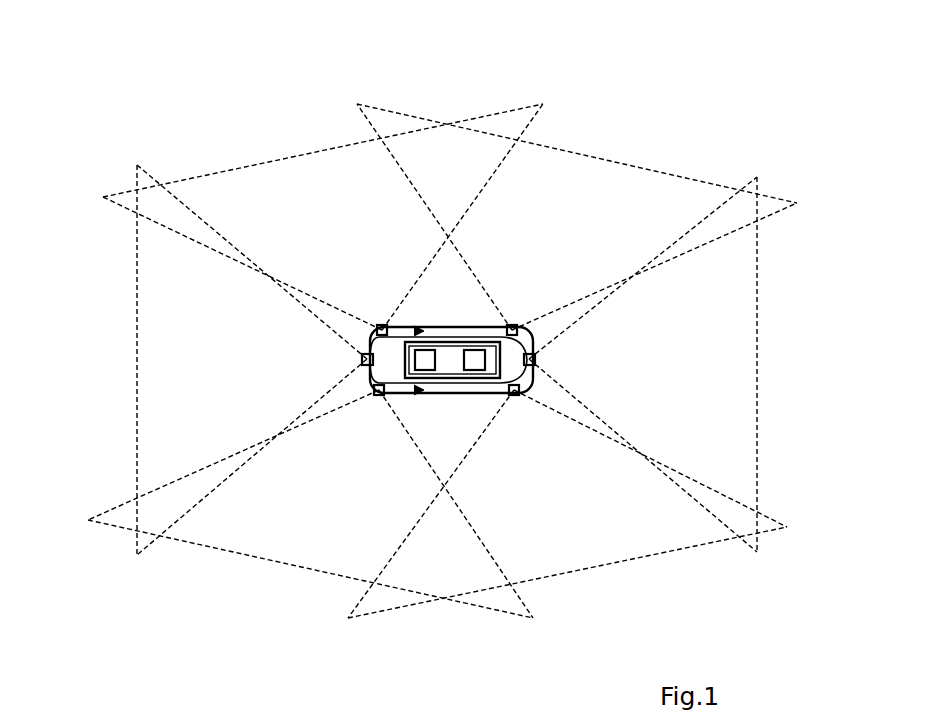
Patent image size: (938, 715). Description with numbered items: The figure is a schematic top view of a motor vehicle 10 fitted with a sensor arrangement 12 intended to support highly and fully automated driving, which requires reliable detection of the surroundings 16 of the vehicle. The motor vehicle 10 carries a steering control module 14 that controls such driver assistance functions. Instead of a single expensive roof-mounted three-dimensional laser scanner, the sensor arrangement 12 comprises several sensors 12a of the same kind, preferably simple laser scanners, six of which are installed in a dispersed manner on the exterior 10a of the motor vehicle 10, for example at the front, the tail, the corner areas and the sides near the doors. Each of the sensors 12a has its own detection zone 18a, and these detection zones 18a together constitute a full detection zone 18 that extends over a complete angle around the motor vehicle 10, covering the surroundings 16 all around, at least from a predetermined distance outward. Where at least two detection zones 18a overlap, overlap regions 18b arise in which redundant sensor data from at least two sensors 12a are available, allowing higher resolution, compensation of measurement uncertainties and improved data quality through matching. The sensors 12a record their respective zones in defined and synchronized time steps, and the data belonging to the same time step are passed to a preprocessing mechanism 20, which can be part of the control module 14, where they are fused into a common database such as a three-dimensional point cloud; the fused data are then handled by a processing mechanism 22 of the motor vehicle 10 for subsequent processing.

The motor vehicle 10 is at (448, 294).
The exterior of the motor vehicle 10a is at (457, 393).
The sensor arrangement 12 is at (448, 363).
The sensors 12a is at (383, 324).
The steering control module 14 is at (462, 276).
The surroundings 16 is at (574, 184).
The full detection zone 18 is at (440, 340).
The detection zones 18a is at (228, 190).
The overlap regions 18b is at (153, 197).
The preprocessing mechanism 20 is at (426, 352).
The processing mechanism 22 is at (474, 352).